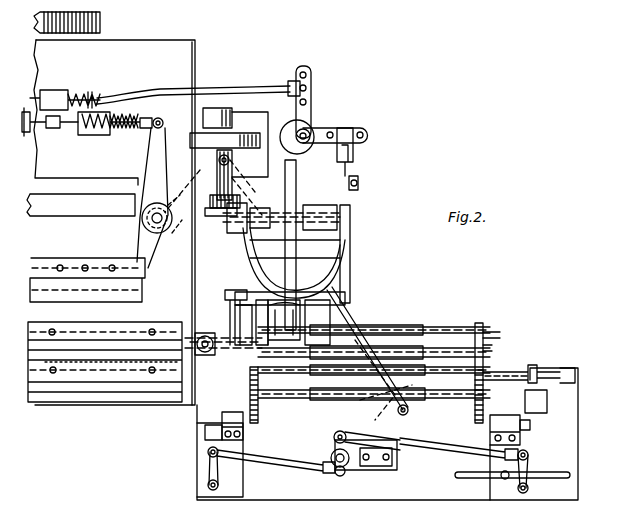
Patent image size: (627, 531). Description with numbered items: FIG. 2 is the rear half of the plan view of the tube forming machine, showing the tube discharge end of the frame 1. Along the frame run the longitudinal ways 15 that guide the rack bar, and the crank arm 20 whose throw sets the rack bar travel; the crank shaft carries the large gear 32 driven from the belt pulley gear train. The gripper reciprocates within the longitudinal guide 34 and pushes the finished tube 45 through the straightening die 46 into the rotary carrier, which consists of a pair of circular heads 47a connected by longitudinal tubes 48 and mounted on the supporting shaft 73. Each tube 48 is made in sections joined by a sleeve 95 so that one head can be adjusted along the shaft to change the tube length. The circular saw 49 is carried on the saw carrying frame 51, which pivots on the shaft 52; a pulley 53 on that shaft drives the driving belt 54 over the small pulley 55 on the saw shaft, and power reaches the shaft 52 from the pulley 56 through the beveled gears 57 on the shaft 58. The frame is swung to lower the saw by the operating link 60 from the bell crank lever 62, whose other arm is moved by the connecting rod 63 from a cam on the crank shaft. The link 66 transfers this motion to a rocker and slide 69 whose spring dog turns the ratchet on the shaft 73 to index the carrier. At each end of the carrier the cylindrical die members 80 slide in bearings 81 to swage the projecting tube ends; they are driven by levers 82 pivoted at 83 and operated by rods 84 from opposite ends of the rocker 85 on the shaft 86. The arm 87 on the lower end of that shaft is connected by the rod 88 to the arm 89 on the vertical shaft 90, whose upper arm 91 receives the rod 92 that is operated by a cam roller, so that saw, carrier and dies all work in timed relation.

The frame 1 is at (179, 39).
The longitudinal ways 15 is at (152, 277).
The crank arm 20 is at (78, 212).
The large gear 32 is at (100, 21).
The longitudinal guide 34 is at (112, 340).
The finished tube 45 is at (500, 345).
The straightening die 46 is at (192, 333).
The circular heads 47a is at (486, 331).
The longitudinal tubes 48 is at (445, 352).
The circular saw 49 is at (250, 326).
The saw carrying frame 51 is at (322, 283).
The shaft 52 is at (292, 213).
The pulley 53 is at (272, 228).
The driving belt 54 is at (288, 258).
The small pulley 55 is at (320, 313).
The pulley 56 is at (188, 132).
The beveled gears 57 is at (213, 214).
The shaft 58 is at (212, 155).
The operating link 60 is at (358, 182).
The bell crank lever 62 is at (331, 130).
The connecting rod 63 is at (231, 88).
The link 66 is at (350, 253).
The slide 69 is at (228, 296).
The supporting shaft 73 is at (513, 372).
The cylindrical die members 80 is at (499, 417).
The bearings 81 is at (510, 420).
The levers 82 is at (530, 458).
The pivot 83 is at (527, 491).
The rods 84 is at (440, 456).
The rocker 85 is at (334, 452).
The shaft 86 is at (346, 473).
The arm 87 is at (400, 437).
The rod 88 is at (338, 317).
The arm 89 is at (172, 225).
The vertical shaft 90 is at (152, 223).
The arm 91 is at (152, 165).
The rod 92 is at (117, 130).
The sleeve 95 is at (400, 352).